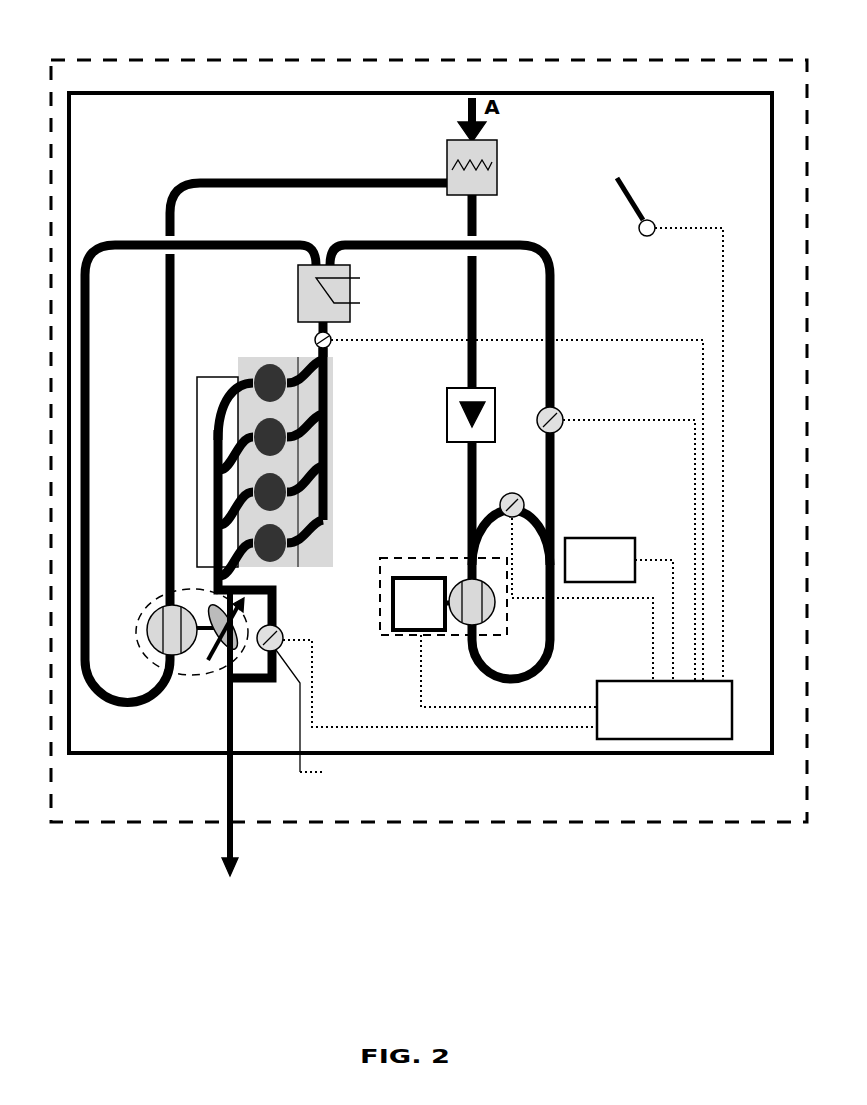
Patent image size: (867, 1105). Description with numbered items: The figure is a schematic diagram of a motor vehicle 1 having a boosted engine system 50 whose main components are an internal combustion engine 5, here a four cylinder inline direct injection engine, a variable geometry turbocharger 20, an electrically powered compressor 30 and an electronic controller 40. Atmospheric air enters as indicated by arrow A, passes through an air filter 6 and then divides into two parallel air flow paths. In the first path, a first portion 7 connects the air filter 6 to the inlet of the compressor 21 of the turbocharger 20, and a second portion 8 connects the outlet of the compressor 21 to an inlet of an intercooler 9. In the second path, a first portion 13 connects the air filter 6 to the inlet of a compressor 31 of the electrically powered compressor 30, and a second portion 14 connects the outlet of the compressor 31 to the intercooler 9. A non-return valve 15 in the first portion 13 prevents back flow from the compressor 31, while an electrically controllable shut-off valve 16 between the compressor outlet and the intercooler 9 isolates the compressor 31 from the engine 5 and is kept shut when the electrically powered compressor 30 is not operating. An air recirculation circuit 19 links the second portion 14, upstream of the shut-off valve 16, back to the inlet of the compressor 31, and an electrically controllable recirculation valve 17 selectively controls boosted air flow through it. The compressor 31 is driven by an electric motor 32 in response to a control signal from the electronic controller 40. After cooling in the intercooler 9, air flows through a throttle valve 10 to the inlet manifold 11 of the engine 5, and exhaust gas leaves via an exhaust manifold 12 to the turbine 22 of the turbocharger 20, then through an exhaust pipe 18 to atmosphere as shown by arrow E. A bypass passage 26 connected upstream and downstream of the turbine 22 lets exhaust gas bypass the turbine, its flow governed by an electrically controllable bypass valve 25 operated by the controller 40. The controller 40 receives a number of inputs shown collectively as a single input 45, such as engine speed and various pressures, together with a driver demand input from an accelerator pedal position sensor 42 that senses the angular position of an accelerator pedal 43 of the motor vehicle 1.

The motor vehicle 1 is at (95, 55).
The boosted engine system 50 is at (187, 86).
The internal combustion engine 5 is at (268, 362).
The air filter 6 is at (498, 185).
The first portion of the first air flow path 7 is at (235, 180).
The second portion of the first air flow path 8 is at (89, 400).
The intercooler 9 is at (297, 298).
The throttle valve 10 is at (314, 340).
The inlet manifold 11 is at (335, 400).
The exhaust manifold 12 is at (207, 376).
The first portion of the second air flow path 13 is at (467, 335).
The second portion of the second air flow path 14 is at (556, 316).
The non-return valve 15 is at (446, 418).
The electrically controllable shut-off valve 16 is at (562, 418).
The electrically controllable recirculation valve 17 is at (532, 502).
The exhaust pipe 18 is at (234, 727).
The air recirculation circuit 19 is at (493, 528).
The variable geometry turbocharger 20 is at (184, 684).
The compressor of the turbocharger 21 is at (157, 613).
The turbine of the turbocharger 22 is at (224, 657).
The electrically controllable bypass valve 25 is at (314, 718).
The bypass passage 26 is at (273, 605).
The electrically powered compressor 30 is at (374, 589).
The compressor of the electrically powered compressor 31 is at (458, 622).
The electric motor 32 is at (393, 607).
The electronic controller 40 is at (651, 727).
The accelerator pedal position sensor 42 is at (637, 226).
The accelerator pedal 43 is at (614, 186).
The inputs 45 is at (587, 573).